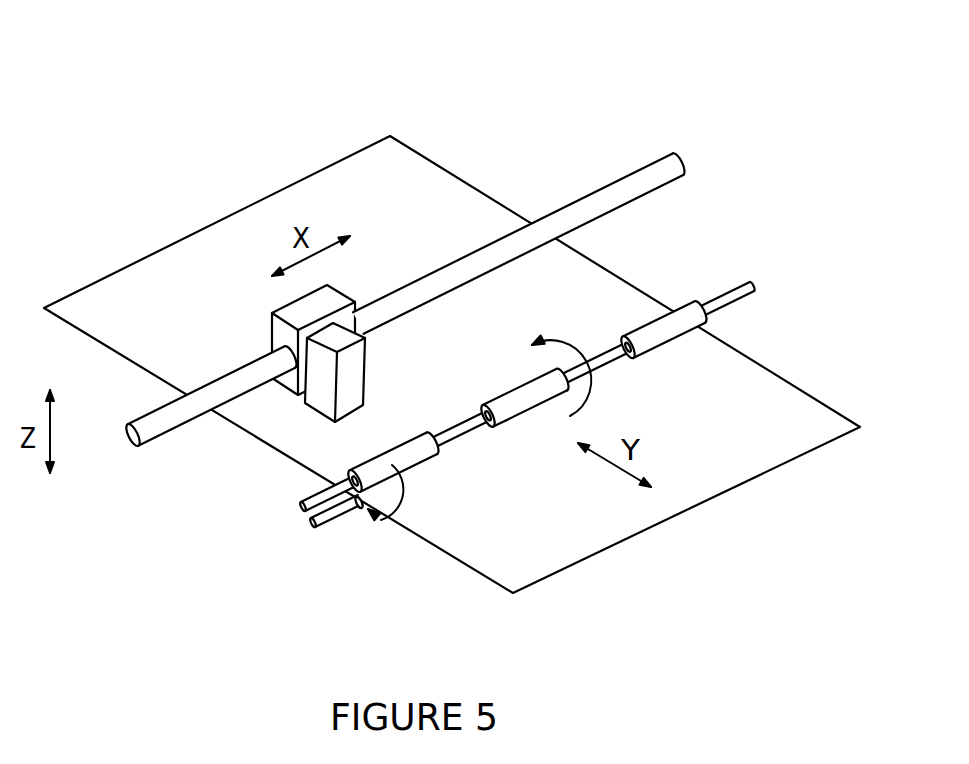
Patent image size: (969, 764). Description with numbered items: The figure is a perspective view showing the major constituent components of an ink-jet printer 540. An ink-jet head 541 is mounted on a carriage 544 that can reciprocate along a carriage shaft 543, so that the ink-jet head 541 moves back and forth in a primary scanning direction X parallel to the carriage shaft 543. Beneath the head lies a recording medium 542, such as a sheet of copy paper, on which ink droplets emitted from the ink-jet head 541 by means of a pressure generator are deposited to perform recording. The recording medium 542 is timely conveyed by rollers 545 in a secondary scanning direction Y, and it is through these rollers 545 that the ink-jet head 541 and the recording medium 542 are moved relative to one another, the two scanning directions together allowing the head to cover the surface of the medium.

The ink-jet printer 540 is at (482, 72).
The ink-jet head 541 is at (361, 372).
The recording medium 542 is at (782, 393).
The carriage shaft 543 is at (596, 196).
The carriage 544 is at (334, 293).
The rollers 545 is at (676, 322).